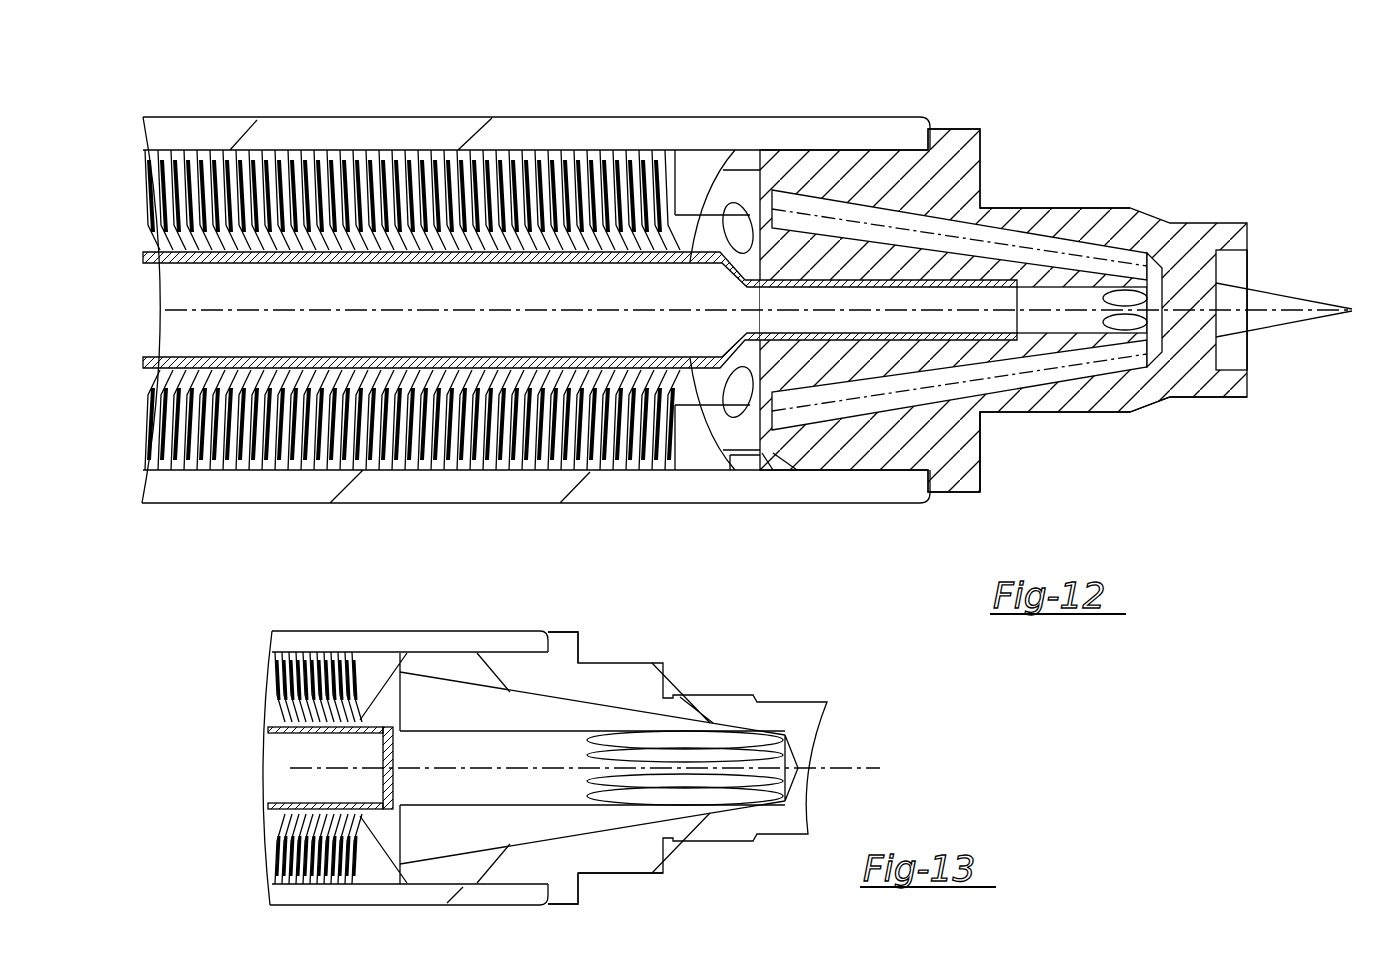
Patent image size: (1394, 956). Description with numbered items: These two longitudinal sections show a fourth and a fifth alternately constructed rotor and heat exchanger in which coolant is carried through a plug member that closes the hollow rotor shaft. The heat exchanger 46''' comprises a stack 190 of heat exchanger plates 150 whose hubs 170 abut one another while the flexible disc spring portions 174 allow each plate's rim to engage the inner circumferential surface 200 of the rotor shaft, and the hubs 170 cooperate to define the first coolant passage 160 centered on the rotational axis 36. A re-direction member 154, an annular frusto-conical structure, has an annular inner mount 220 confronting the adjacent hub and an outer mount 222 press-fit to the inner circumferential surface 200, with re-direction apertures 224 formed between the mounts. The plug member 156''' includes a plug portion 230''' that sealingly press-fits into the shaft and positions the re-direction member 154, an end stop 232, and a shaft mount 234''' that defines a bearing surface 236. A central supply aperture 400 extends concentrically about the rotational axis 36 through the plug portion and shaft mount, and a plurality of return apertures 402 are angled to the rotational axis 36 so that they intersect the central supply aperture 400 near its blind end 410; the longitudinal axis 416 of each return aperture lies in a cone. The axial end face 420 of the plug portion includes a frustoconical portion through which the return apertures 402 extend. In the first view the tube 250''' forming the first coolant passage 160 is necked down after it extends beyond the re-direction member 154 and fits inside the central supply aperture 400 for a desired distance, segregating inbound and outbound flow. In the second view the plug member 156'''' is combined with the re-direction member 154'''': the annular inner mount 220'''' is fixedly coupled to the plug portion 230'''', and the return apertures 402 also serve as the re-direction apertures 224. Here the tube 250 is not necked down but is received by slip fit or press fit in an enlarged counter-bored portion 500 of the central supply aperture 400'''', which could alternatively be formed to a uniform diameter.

In FIG. 12, the rotational axis 36 is at (1292, 310).
In FIG. 13, the rotational axis 36 is at (876, 750).
In FIG. 12, the heat exchanger 46''' is at (536, 265).
In FIG. 12, the heat exchanger plates 150 is at (270, 186).
In FIG. 12, the re-direction member 154 is at (676, 495).
In FIG. 13, the re-direction member 154'''' is at (354, 803).
In FIG. 12, the plug member 156''' is at (1010, 272).
In FIG. 13, the plug member 156'''' is at (556, 754).
In FIG. 12, the first coolant passage 160 is at (342, 298).
In FIG. 12, the hubs 170 is at (237, 372).
In FIG. 12, the disc spring portions 174 is at (404, 193).
In FIG. 12, the stack 190 is at (688, 157).
In FIG. 12, the inner circumferential surface 200 is at (258, 470).
In FIG. 12, the annular inner mount 220 is at (716, 310).
In FIG. 13, the annular inner mount 220'''' is at (392, 812).
In FIG. 12, the outer mount 222 is at (745, 457).
In FIG. 12, the re-direction apertures 224 is at (728, 243).
In FIG. 13, the re-direction apertures 224 is at (563, 768).
In FIG. 12, the plug portion 230''' is at (945, 338).
In FIG. 13, the plug portion 230'''' is at (489, 801).
In FIG. 12, the end stop 232 is at (965, 485).
In FIG. 13, the end stop 232 is at (570, 895).
In FIG. 12, the shaft mount 234''' is at (1197, 376).
In FIG. 12, the bearing surface 236 is at (1115, 415).
In FIG. 13, the tube 250 is at (287, 768).
In FIG. 12, the tube 250''' is at (580, 310).
In FIG. 12, the central supply aperture 400 is at (1084, 252).
In FIG. 13, the central supply aperture 400'''' is at (599, 804).
In FIG. 12, the return apertures 402 is at (990, 235).
In FIG. 13, the return apertures 402 is at (557, 712).
In FIG. 12, the blind end 410 is at (1180, 300).
In FIG. 12, the longitudinal axis 416 is at (1262, 283).
In FIG. 12, the axial end face 420 is at (797, 455).
In FIG. 13, the counter-bored portion 500 is at (362, 720).